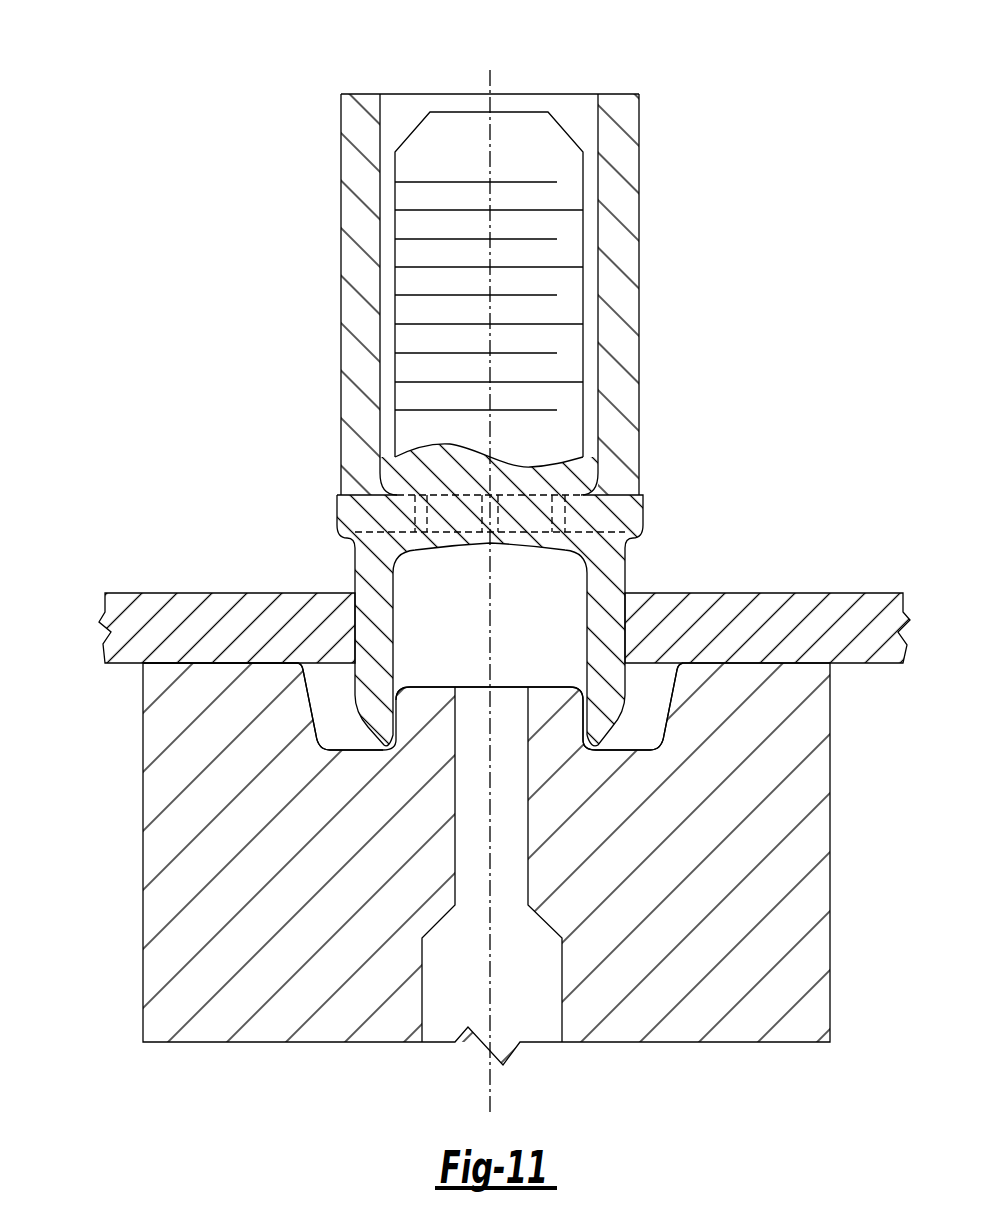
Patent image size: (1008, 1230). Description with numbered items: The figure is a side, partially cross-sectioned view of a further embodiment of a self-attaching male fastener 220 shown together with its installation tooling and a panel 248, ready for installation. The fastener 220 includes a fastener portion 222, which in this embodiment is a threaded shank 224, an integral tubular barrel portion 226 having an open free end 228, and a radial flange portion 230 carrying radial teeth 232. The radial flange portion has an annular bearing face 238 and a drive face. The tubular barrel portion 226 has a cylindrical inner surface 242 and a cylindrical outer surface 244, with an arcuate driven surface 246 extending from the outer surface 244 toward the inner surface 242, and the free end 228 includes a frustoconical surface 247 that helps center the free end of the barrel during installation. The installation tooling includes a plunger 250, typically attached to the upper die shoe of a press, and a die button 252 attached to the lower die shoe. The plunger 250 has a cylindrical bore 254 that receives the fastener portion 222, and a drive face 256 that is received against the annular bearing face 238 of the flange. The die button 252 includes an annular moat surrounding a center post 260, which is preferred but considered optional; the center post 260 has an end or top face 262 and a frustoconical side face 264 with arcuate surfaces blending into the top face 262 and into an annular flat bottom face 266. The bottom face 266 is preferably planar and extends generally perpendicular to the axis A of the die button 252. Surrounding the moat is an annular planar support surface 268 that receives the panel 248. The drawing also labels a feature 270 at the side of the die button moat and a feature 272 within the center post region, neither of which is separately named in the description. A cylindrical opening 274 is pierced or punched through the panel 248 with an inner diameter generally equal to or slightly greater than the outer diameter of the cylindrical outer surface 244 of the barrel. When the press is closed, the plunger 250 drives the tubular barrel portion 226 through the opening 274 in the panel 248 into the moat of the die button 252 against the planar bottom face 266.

The self-attaching male fastener 220 is at (650, 550).
The fastener portion 222 is at (598, 256).
The threaded shank 224 is at (570, 190).
The tubular barrel portion 226 is at (612, 713).
The open free end 228 is at (383, 752).
The radial flange portion 230 is at (330, 512).
The radial teeth 232 is at (418, 557).
The annular bearing face 238 is at (360, 472).
The cylindrical inner surface 242 is at (587, 616).
The cylindrical outer surface 244 is at (628, 630).
The arcuate driven surface 246 is at (318, 741).
The frustoconical surface 247 is at (584, 746).
The panel 248 is at (197, 595).
The plunger 250 is at (613, 332).
The die button 252 is at (148, 910).
The cylindrical bore 254 is at (595, 108).
The drive face 256 is at (643, 510).
The center post 260 is at (433, 683).
The top face 262 is at (548, 686).
The frustoconical side face 264 is at (380, 716).
The annular flat bottom face 266 is at (633, 740).
The annular planar support surface 268 is at (200, 648).
The groove wall 270 is at (318, 698).
The central bore 272 is at (528, 826).
The cylindrical opening 274 is at (358, 577).
The axis A is at (490, 1095).